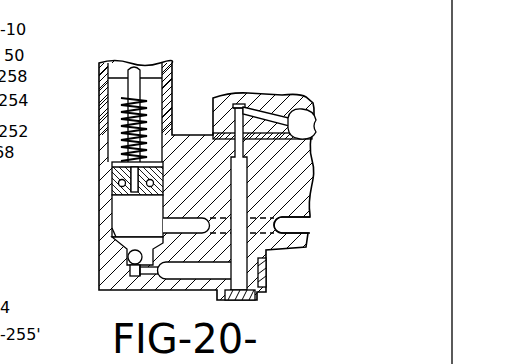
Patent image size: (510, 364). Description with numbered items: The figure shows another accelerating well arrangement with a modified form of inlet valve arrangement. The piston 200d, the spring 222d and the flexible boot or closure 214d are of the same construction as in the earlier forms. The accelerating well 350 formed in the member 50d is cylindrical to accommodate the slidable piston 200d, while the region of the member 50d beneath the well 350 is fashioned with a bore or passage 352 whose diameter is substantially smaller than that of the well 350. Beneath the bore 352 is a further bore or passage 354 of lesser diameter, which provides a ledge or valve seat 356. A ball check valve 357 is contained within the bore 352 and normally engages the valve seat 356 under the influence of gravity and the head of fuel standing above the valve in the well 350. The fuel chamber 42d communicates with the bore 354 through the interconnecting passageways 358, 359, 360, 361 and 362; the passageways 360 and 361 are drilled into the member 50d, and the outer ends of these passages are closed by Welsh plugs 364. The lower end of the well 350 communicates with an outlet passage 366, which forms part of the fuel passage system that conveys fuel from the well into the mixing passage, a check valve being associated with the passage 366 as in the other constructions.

The flexible boot or closure 214d is at (167, 70).
The spring 222d is at (145, 105).
The piston 200d is at (112, 180).
The member 50d is at (102, 220).
The accelerating well 350 is at (118, 205).
The bore or passage 352 is at (120, 247).
The ball check valve 357 is at (128, 257).
The ledge or valve seat 356 is at (130, 266).
The bore or passage 354 is at (133, 273).
The passageway 362 is at (145, 278).
The passageway 361 is at (197, 277).
The passageway 360 is at (245, 190).
The passageway 359 is at (237, 103).
The passageway 358 is at (268, 118).
The fuel chamber 42d is at (315, 113).
The outlet passage 366 is at (284, 240).
The Welsh plugs 364 is at (248, 299).